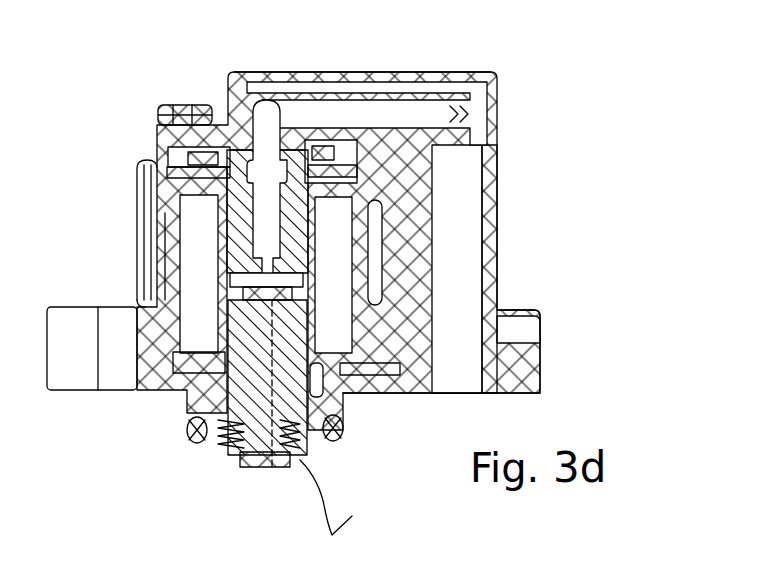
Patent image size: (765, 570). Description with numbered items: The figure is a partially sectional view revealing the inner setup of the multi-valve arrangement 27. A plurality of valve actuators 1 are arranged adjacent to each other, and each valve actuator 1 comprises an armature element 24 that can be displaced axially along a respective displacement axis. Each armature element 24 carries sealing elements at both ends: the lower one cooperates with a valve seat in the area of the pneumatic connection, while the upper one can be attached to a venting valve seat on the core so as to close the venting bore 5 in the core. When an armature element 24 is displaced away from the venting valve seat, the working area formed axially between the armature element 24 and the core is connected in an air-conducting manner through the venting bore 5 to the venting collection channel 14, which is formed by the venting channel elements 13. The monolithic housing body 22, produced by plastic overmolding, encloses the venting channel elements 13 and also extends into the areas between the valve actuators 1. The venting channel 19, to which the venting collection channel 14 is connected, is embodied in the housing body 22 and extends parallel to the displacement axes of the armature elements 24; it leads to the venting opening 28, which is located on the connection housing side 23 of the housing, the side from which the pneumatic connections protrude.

The valve actuator 1 is at (267, 397).
The venting bore 5 is at (268, 240).
The venting channel element 13 is at (278, 72).
The venting collection channel 14 is at (283, 113).
The venting channel 19 is at (463, 222).
The monolithic housing body 22 is at (485, 273).
The connection housing side 23 is at (373, 393).
The armature element 24 is at (270, 400).
The multi-valve arrangement 27 is at (462, 72).
The venting opening 28 is at (450, 393).